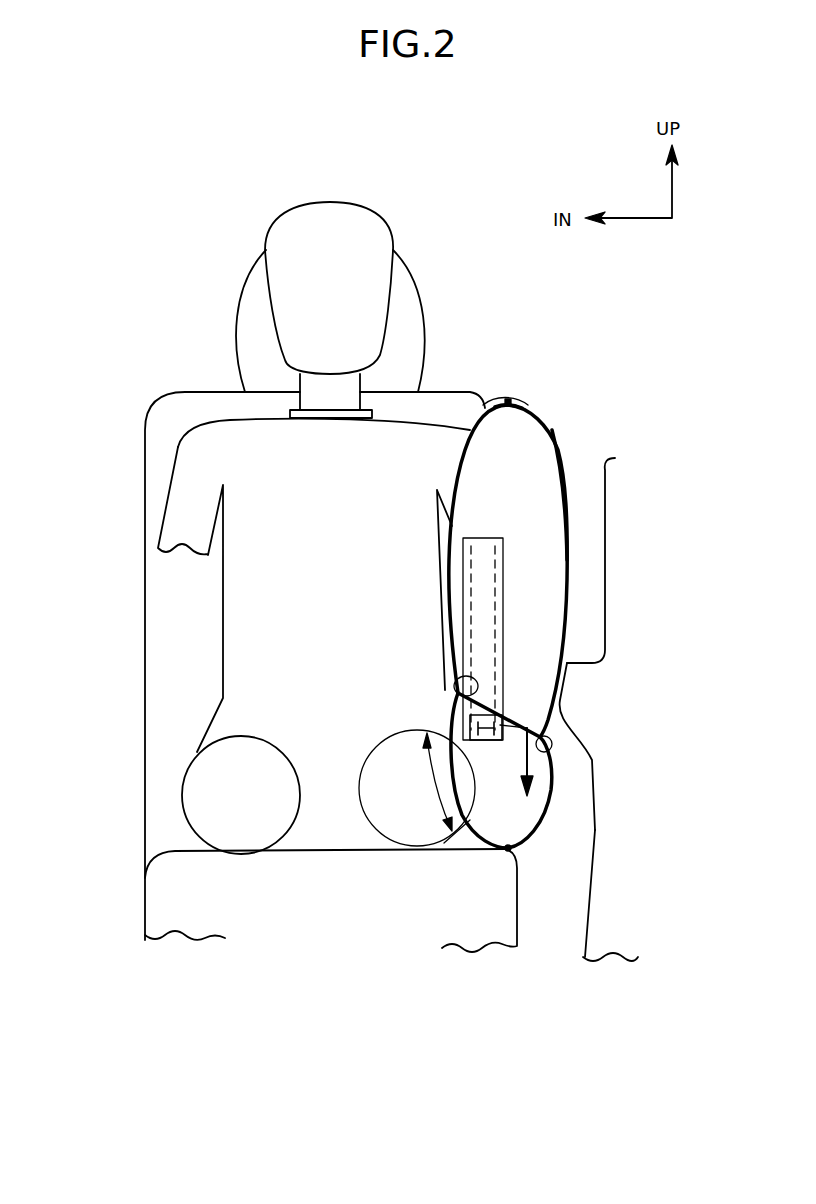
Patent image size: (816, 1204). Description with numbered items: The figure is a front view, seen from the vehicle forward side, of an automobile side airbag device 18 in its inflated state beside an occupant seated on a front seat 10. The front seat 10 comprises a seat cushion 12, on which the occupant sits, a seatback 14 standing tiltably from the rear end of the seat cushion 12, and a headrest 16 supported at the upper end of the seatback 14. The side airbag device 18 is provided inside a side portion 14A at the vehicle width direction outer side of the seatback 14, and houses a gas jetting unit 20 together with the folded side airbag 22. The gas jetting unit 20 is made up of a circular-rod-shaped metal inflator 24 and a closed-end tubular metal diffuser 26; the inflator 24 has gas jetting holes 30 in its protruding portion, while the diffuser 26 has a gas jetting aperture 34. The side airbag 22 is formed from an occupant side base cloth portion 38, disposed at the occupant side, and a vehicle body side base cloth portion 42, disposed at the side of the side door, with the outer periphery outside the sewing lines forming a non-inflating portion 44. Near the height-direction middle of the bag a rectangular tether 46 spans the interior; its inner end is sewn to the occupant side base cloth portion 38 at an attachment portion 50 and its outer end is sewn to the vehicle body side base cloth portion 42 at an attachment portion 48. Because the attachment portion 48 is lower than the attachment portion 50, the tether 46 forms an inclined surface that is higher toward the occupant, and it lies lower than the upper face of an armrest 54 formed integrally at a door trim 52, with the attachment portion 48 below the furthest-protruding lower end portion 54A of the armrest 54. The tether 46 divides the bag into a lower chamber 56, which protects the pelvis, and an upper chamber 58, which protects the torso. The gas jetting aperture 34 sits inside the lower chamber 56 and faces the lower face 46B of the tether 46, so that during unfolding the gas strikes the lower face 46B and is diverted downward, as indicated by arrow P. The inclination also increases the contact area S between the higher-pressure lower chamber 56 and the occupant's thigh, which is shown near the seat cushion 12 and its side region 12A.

The front seat 10 is at (167, 373).
The seat cushion 12 is at (155, 910).
The seat cushion side portion 12A is at (490, 905).
The seatback 14 is at (145, 693).
The side portion 14A is at (507, 398).
The headrest 16 is at (230, 333).
The side airbag device 18 is at (580, 498).
The gas jetting unit 20 is at (660, 538).
The side airbag 22 is at (549, 421).
The inflator 24 is at (497, 568).
The diffuser 26 is at (505, 598).
The gas jetting holes 30 is at (433, 763).
The gas jetting aperture 34 is at (507, 740).
The occupant side base cloth portion 38 is at (486, 398).
The vehicle body side base cloth portion 42 is at (560, 440).
The non-inflating portion 44 is at (514, 400).
The tether 46 is at (518, 713).
The lower face 46B is at (452, 698).
The attachment portion 48 is at (550, 742).
The attachment portion 50 is at (458, 693).
The door trim 52 is at (585, 905).
The armrest 54 is at (578, 678).
The lower end portion 54A is at (570, 727).
The lower chamber 56 is at (507, 817).
The upper chamber 58 is at (520, 490).
The contact area S is at (398, 757).
The arrow P is at (552, 762).